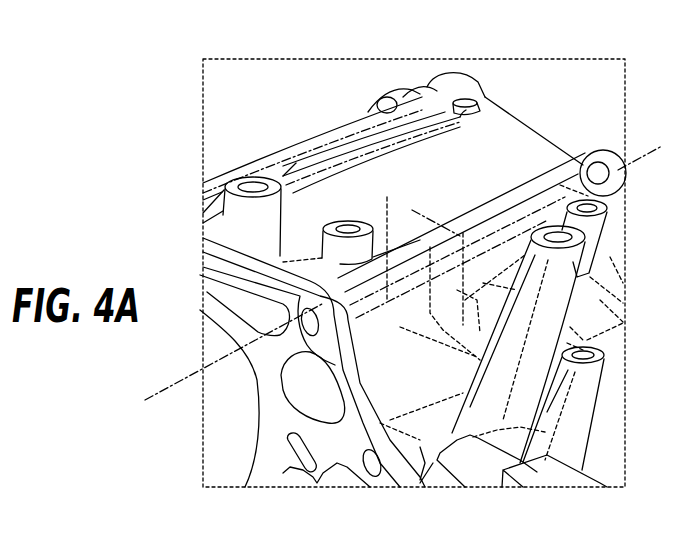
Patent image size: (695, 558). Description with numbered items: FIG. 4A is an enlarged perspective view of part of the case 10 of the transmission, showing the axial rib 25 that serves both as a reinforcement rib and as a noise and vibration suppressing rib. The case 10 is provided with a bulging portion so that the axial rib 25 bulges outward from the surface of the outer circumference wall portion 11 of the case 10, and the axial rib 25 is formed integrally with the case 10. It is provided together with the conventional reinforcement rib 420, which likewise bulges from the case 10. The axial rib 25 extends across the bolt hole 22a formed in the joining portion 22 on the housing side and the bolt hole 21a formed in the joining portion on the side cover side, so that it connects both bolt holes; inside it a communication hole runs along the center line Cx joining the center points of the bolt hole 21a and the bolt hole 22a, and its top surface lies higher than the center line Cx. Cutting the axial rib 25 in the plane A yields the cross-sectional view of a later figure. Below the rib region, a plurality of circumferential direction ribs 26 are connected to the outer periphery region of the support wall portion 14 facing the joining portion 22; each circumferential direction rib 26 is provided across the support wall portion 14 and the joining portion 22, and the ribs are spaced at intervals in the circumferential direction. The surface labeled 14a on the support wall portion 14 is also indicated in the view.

The case 10 is at (217, 140).
The outer circumference wall portion 11 is at (528, 120).
The support wall portion 14 is at (235, 320).
The mounting surface 14a is at (251, 471).
The bolt hole 21a is at (600, 150).
The joining portion 22 is at (203, 263).
The bolt hole 22a is at (300, 300).
The axial rib 25 is at (481, 207).
The circumferential direction rib 26 is at (277, 338).
The reinforcement rib 420 is at (265, 168).
The plane A is at (426, 213).
The center line Cx is at (231, 361).